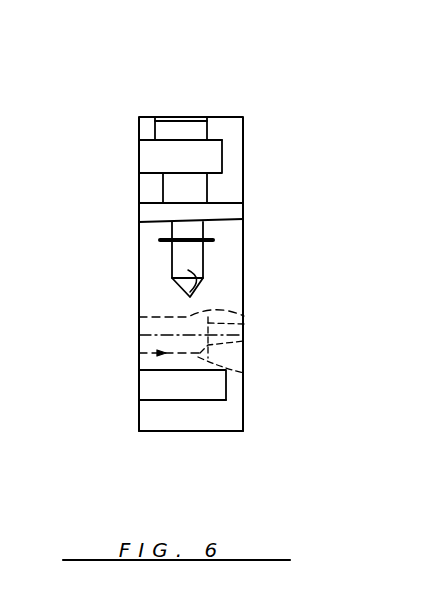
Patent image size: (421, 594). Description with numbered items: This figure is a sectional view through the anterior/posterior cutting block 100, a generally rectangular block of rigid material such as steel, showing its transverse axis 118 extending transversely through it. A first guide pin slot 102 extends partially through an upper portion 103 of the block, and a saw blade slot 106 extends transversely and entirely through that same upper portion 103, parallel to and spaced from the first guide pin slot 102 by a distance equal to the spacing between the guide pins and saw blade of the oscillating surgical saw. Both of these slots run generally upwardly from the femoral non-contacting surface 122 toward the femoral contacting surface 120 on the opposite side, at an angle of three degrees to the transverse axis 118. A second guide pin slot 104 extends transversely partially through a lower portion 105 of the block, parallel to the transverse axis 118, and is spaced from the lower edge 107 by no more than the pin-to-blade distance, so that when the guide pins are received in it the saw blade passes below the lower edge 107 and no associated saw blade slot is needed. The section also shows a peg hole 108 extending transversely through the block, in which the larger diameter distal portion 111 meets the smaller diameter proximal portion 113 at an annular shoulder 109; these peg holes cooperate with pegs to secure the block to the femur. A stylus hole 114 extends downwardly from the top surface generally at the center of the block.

The anterior/posterior cutting block 100 is at (238, 117).
The first guide pin slot 102 is at (222, 157).
The upper portion 103 is at (139, 130).
The second guide pin slot 104 is at (224, 385).
The lower portion 105 is at (139, 414).
The saw blade slot 106 is at (225, 203).
The lower edge 107 is at (172, 431).
The peg hole 108 is at (244, 316).
The annular shoulder 109 is at (244, 373).
The larger diameter distal portion 111 is at (139, 349).
The smaller diameter proximal portion 113 is at (244, 341).
The stylus hole 114 is at (193, 287).
The transverse axis 118 is at (139, 335).
The femoral contacting surface 120 is at (244, 290).
The femoral non-contacting surface 122 is at (139, 283).